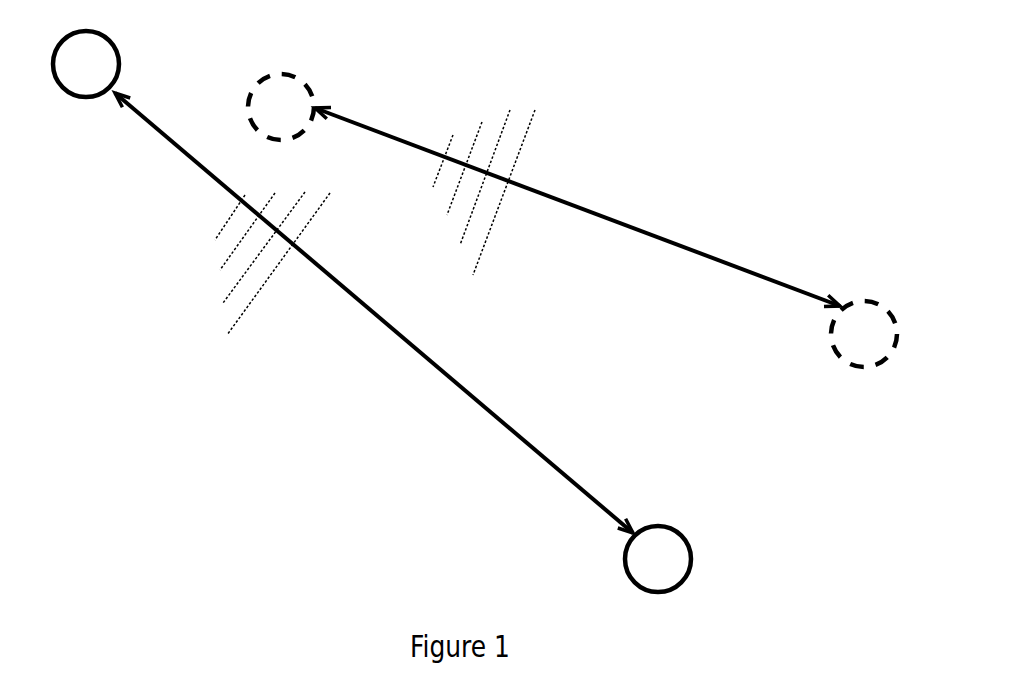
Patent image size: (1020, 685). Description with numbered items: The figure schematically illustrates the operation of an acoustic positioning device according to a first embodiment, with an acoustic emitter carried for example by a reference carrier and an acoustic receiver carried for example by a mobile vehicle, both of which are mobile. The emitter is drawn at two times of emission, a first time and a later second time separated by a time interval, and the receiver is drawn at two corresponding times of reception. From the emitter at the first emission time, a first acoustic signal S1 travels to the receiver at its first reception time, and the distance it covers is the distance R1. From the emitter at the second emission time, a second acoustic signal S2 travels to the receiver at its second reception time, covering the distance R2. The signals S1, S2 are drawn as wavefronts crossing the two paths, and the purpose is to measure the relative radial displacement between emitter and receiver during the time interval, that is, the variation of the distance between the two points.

The distance traveled by first acoustic signal R1 is at (450, 379).
The distance traveled by second acoustic signal R2 is at (688, 252).
The first acoustic signal S1 is at (207, 280).
The second acoustic signal S2 is at (530, 158).